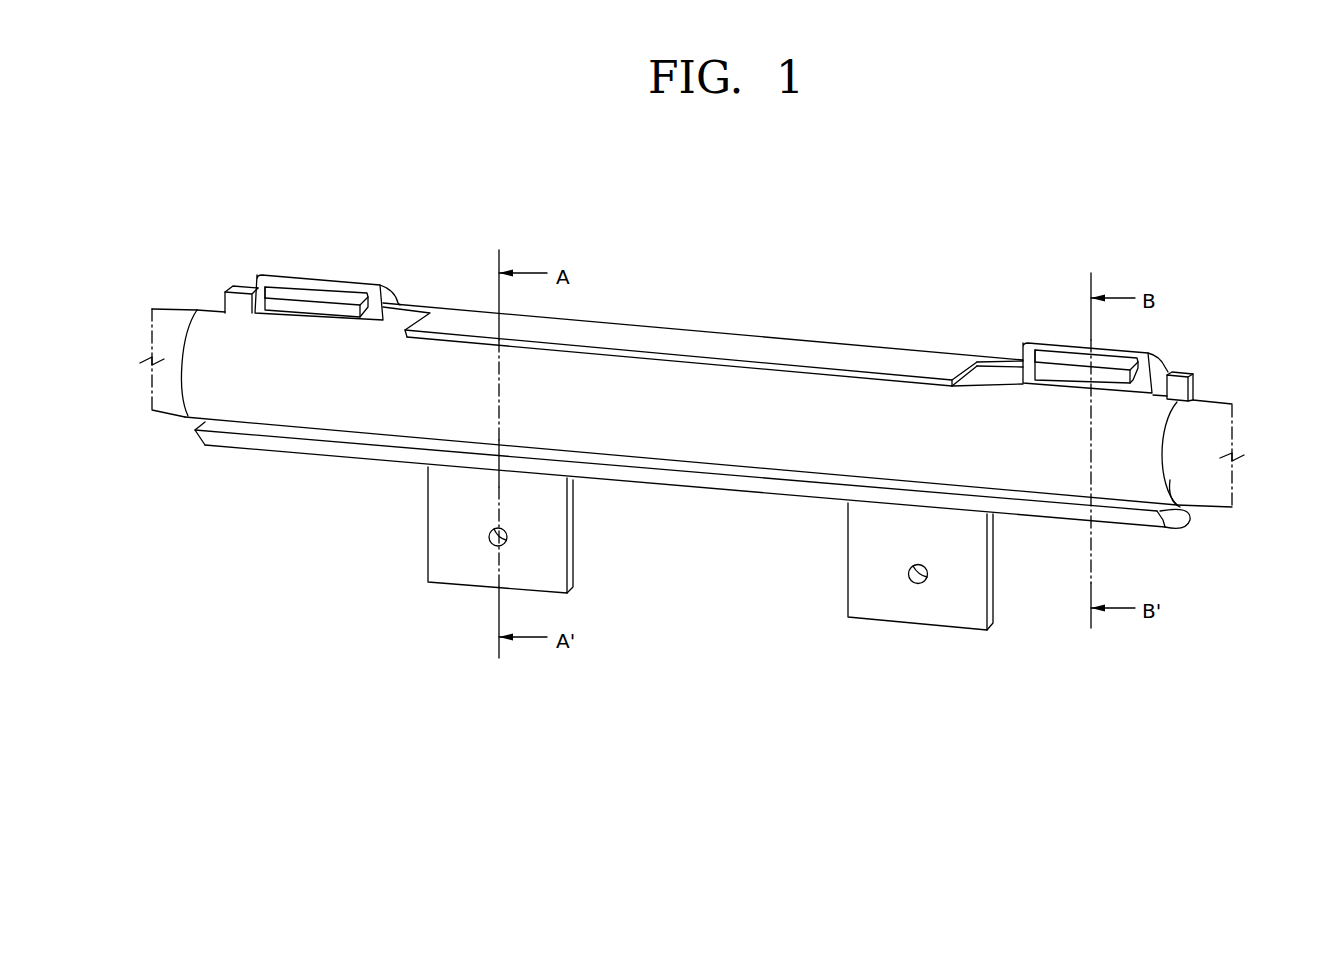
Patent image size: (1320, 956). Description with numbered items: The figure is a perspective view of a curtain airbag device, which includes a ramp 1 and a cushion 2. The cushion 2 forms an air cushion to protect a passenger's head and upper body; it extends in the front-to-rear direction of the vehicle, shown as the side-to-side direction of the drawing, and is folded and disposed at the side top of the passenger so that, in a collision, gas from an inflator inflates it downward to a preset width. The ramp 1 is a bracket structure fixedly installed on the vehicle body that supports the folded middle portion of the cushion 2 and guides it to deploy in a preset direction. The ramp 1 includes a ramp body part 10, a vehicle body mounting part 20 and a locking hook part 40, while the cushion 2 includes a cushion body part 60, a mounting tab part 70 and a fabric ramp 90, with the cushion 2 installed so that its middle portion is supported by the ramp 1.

The ramp 1 is at (930, 350).
The cushion 2 is at (357, 433).
The ramp body part 10 is at (694, 340).
The vehicle body mounting part 20 is at (937, 608).
The locking hook part 40 is at (1058, 360).
The cushion body part 60 is at (1207, 490).
The mounting tab part 70 is at (1168, 372).
The fabric ramp 90 is at (820, 415).